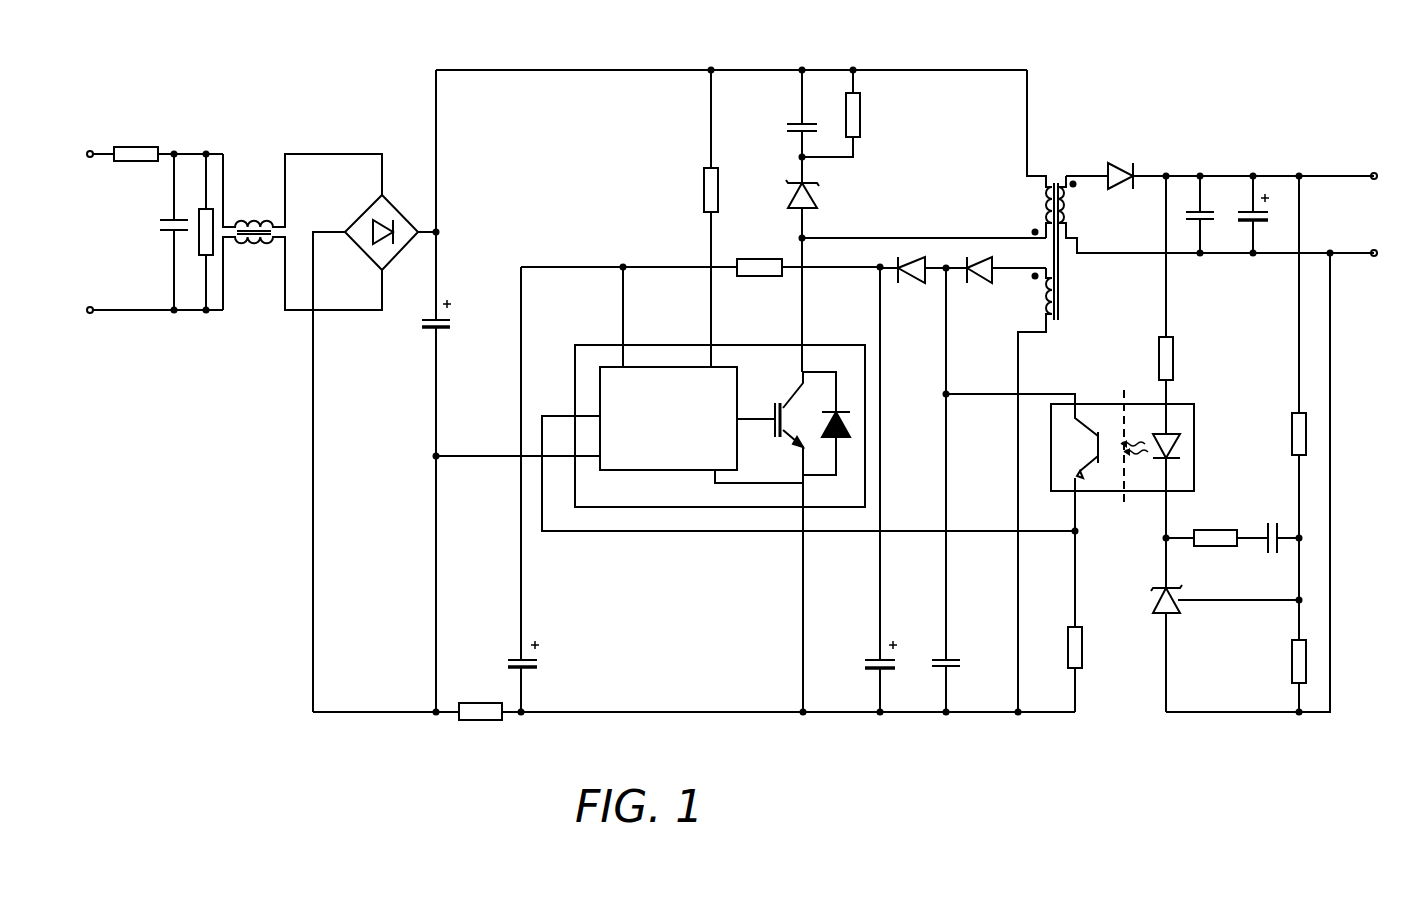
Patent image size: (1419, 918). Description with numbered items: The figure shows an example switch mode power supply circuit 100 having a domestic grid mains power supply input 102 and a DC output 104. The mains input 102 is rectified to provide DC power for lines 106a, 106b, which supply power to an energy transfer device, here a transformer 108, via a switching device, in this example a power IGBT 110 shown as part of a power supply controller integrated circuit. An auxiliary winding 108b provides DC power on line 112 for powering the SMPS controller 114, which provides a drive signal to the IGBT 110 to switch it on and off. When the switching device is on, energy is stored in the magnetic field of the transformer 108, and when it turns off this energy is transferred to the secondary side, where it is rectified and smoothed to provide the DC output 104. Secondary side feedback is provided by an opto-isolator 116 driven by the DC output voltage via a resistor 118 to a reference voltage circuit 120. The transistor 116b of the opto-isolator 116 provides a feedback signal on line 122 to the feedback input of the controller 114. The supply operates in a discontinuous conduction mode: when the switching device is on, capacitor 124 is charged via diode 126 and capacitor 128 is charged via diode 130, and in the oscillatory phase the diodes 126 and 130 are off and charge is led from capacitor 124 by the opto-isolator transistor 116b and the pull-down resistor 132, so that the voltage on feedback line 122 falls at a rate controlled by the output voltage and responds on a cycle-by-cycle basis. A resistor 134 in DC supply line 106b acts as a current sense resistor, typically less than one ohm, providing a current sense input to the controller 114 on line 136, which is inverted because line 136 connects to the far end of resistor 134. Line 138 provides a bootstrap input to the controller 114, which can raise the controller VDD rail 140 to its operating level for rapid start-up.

The switch mode power supply circuit 100 is at (318, 744).
The domestic grid mains power supply input 102 is at (128, 226).
The DC output 104 is at (1370, 212).
The DC supply line 106a is at (541, 70).
The DC supply line 106b is at (444, 711).
The transformer 108 is at (1057, 162).
The auxiliary winding 108b is at (1053, 321).
The power IGBT 110 is at (833, 340).
The line 112 is at (572, 268).
The SMPS controller 114 is at (690, 431).
The opto-isolator 116 is at (1196, 395).
The transistor 116b is at (1089, 479).
The resistor 118 is at (1172, 360).
The reference voltage circuit 120 is at (1180, 527).
The feedback line 122 is at (698, 533).
The capacitor 124 is at (952, 655).
The diode 126 is at (982, 262).
The capacitor 128 is at (878, 655).
The diode 130 is at (922, 284).
The pull-down resistor 132 is at (1085, 643).
The resistor 134 is at (481, 720).
The line 136 is at (450, 456).
The line 138 is at (714, 298).
The VDD rail 140 is at (628, 297).